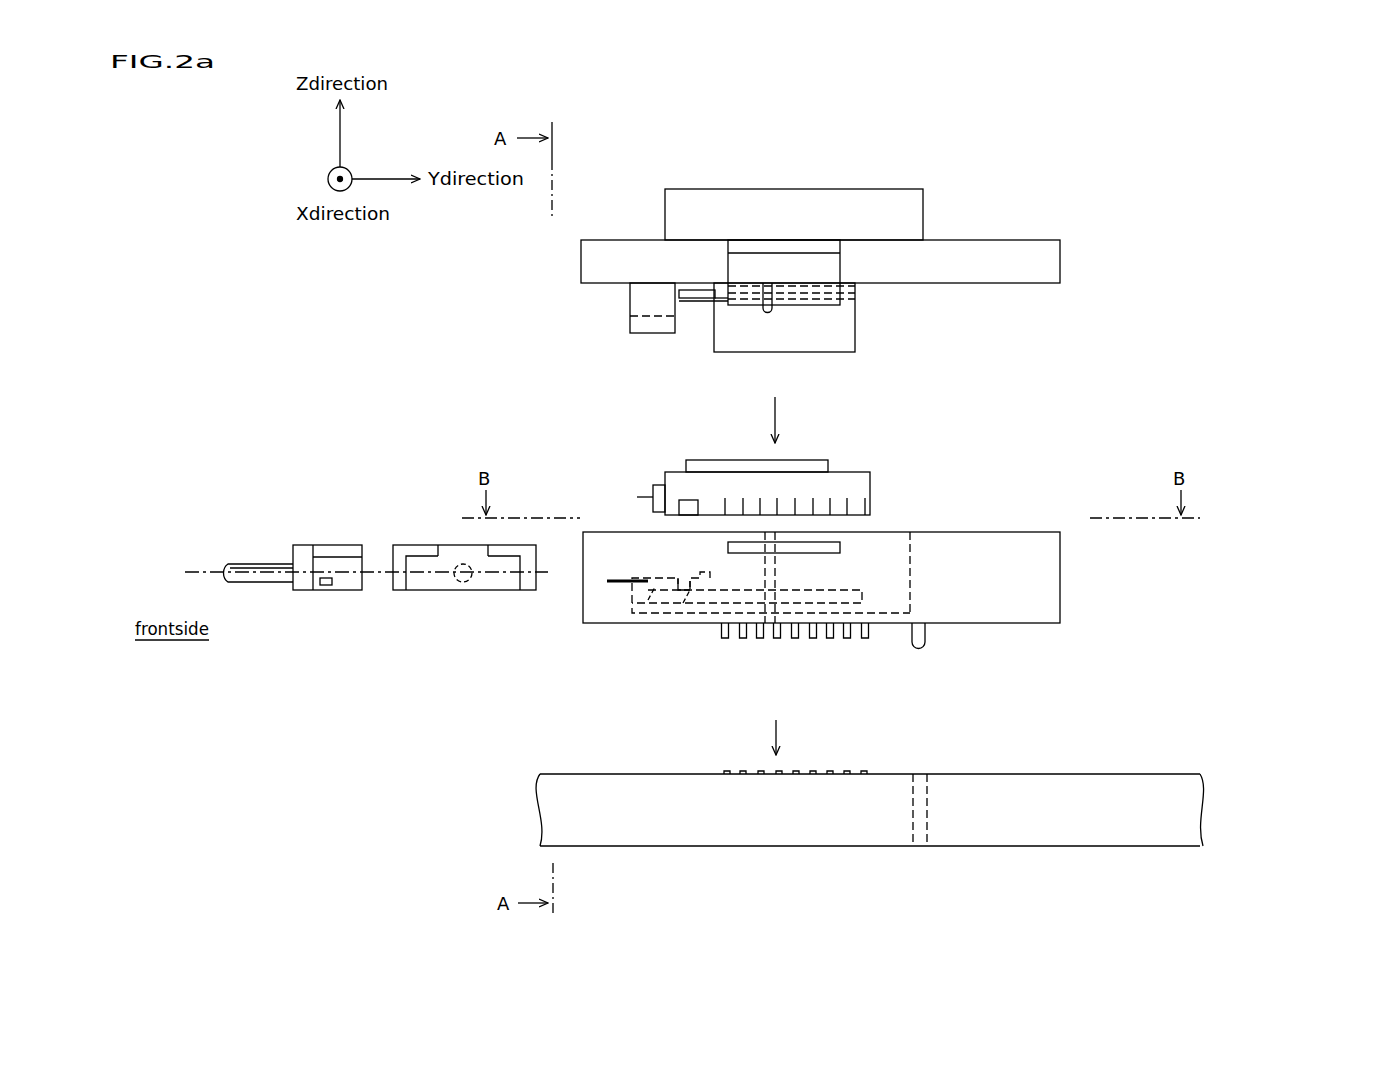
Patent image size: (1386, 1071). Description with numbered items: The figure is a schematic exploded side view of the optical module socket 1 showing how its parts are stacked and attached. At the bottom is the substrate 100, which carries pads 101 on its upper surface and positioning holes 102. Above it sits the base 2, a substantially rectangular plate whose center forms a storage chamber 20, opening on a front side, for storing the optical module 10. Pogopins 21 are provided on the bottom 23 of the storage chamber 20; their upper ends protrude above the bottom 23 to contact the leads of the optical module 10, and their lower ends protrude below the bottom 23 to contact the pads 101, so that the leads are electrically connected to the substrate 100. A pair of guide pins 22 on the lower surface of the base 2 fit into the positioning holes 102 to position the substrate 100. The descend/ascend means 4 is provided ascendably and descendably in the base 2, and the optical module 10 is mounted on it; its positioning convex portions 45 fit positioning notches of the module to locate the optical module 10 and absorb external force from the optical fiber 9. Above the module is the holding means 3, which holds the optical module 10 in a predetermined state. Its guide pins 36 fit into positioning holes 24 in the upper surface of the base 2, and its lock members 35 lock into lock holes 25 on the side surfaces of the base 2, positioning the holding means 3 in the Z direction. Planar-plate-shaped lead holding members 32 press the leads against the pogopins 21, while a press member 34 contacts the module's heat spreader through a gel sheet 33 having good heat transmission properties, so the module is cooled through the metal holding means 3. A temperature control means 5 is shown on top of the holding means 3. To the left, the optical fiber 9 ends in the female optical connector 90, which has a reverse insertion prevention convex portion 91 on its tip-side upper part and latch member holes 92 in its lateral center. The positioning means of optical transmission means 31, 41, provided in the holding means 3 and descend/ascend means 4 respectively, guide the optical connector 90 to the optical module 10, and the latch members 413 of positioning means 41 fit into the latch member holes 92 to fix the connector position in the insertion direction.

The optical module socket 1 is at (1095, 155).
The base 2 is at (1033, 530).
The holding means 3 is at (1065, 250).
The descend/ascend means 4 is at (647, 578).
The temperature control means 5 is at (895, 197).
The optical fiber 9 is at (243, 565).
The optical module 10 is at (873, 485).
The storage chamber 20 is at (905, 615).
The pogopins 21 is at (775, 640).
The guide pins 22 is at (925, 635).
The bottom 23 is at (905, 552).
The positioning holes 24 is at (777, 558).
The lock holes 25 is at (840, 548).
The positioning means of optical transmission means 31 is at (630, 321).
The lead holding members 32 is at (857, 343).
The gel sheet 33 is at (710, 302).
The press member 34 is at (682, 292).
The lock members 35 is at (728, 267).
The guide pins 36 is at (772, 312).
The positioning means of optical transmission means 41 is at (648, 617).
The positioning convex portions 45 is at (690, 603).
The optical connector 90 is at (318, 545).
The reverse insertion prevention convex portion 91 is at (447, 545).
The latch member holes 92 is at (335, 608).
The substrate 100 is at (1147, 786).
The pads 101 is at (812, 771).
The positioning holes 102 is at (930, 785).
The latch members 413 is at (607, 583).